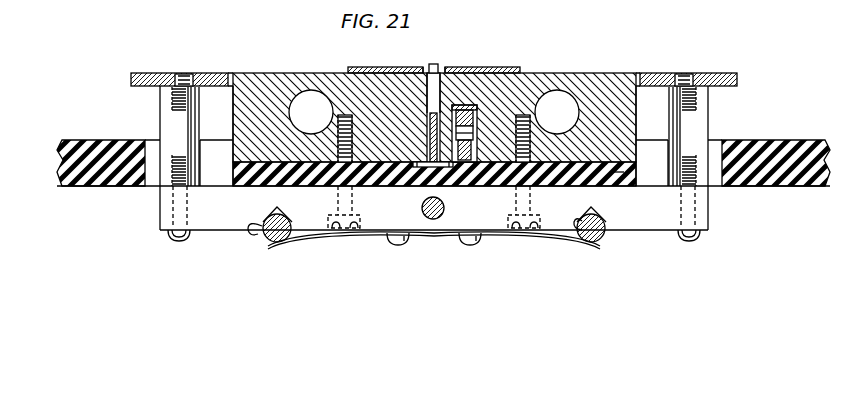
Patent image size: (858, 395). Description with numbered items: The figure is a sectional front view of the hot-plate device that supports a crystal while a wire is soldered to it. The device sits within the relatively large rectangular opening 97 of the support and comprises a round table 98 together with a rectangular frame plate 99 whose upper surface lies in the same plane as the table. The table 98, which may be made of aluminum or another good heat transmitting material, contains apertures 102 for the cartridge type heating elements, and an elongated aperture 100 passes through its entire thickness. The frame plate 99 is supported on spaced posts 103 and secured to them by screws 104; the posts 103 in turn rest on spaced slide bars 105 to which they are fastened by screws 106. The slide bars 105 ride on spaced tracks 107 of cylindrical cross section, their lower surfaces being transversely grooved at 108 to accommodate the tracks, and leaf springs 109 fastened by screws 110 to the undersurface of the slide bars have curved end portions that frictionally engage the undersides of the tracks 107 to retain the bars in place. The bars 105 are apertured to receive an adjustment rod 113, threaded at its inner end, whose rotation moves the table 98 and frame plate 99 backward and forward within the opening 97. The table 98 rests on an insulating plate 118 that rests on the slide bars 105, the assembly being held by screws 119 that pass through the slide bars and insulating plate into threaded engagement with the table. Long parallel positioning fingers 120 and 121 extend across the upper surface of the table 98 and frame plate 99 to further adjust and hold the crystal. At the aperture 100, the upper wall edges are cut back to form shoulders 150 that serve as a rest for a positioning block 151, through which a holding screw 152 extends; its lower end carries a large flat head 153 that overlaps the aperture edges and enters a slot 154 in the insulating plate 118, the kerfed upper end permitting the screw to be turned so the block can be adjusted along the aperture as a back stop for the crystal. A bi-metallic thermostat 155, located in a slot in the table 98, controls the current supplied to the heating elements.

The rectangular opening 97 is at (718, 143).
The round table 98 is at (587, 73).
The rectangular frame plate 99 is at (710, 73).
The elongated aperture 100 is at (427, 94).
The apertures 102 is at (296, 91).
The posts 103 is at (167, 127).
The screws 104 is at (184, 76).
The slide bars 105 is at (163, 212).
The screws 106 is at (182, 238).
The tracks 107 is at (278, 242).
The transverse grooves 108 is at (248, 231).
The leaf springs 109 is at (309, 238).
The screws 110 is at (405, 241).
The adjustment rod 113 is at (422, 208).
The insulating plate 118 is at (617, 172).
The screws 119 is at (343, 215).
The positioning finger 120 is at (485, 66).
The positioning finger 121 is at (350, 66).
The shoulders 150 is at (449, 56).
The positioning block 151 is at (433, 64).
The holding screw 152 is at (430, 146).
The flat head 153 is at (441, 152).
The slot 154 is at (472, 193).
The thermostat 155 is at (471, 162).